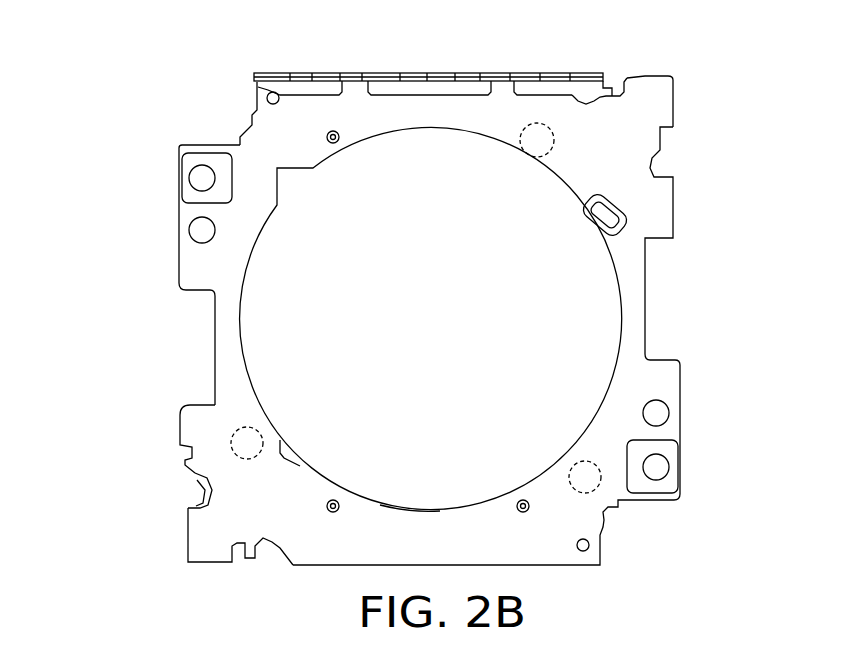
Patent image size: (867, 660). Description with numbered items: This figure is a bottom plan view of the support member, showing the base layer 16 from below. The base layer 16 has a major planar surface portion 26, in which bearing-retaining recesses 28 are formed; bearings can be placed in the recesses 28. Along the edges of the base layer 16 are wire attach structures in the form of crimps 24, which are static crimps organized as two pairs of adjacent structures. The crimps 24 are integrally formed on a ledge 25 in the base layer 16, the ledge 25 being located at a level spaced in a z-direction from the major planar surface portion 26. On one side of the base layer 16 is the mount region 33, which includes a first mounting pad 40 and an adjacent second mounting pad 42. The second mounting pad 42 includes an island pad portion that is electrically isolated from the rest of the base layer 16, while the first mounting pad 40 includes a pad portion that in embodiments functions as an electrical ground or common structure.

The base layer 16 is at (452, 117).
The crimps 24 is at (222, 567).
The ledge 25 is at (220, 532).
The major planar surface portion 26 is at (405, 510).
The bearing-retaining recesses 28 is at (538, 142).
The mount region 33 is at (129, 275).
The first mounting pad 40 is at (197, 262).
The second mounting pad 42 is at (180, 159).